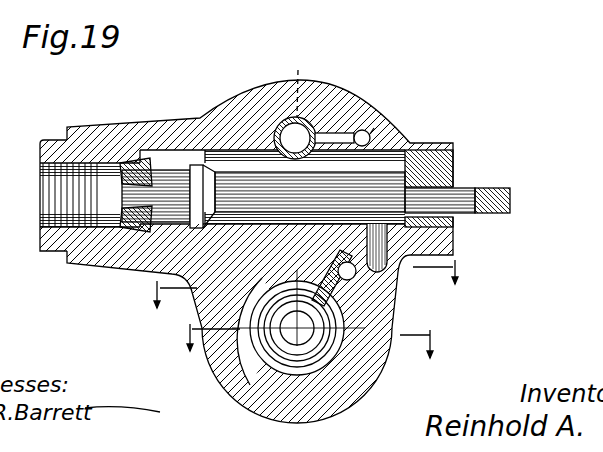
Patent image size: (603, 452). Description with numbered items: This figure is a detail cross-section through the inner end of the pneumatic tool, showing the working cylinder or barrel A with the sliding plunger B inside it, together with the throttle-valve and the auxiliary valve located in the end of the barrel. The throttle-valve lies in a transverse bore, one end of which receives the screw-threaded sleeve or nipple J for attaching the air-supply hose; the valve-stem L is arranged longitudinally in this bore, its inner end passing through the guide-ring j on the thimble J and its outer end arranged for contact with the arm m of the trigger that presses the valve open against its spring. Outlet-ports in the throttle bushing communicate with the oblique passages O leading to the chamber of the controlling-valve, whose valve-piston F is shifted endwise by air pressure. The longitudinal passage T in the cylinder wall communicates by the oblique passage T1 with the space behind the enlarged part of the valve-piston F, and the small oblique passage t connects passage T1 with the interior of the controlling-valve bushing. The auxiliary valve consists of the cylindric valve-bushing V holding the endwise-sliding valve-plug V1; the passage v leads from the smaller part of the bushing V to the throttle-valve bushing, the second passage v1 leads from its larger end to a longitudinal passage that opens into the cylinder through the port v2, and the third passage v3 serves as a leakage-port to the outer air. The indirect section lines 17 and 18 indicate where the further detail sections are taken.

The valve-stem L is at (455, 142).
The screw-threaded sleeve or nipple J is at (44, 252).
The rod I is at (197, 224).
The guide-ring j is at (430, 190).
The arm m is at (513, 193).
The oblique passages O is at (452, 247).
The valve-bushing V is at (295, 138).
The passage v is at (270, 155).
The second passage v1 is at (368, 126).
The port v2 is at (348, 230).
The third passage v3 is at (304, 79).
The valve-plug V1 is at (375, 126).
The sliding plunger B is at (254, 252).
The working cylinder or barrel A is at (224, 391).
The valve-piston F is at (312, 352).
The longitudinal passage T is at (322, 260).
The oblique passage T1 is at (352, 284).
The small oblique passage t is at (355, 333).
The section line 17 17 is at (324, 305).
The section line 18 18 is at (292, 319).